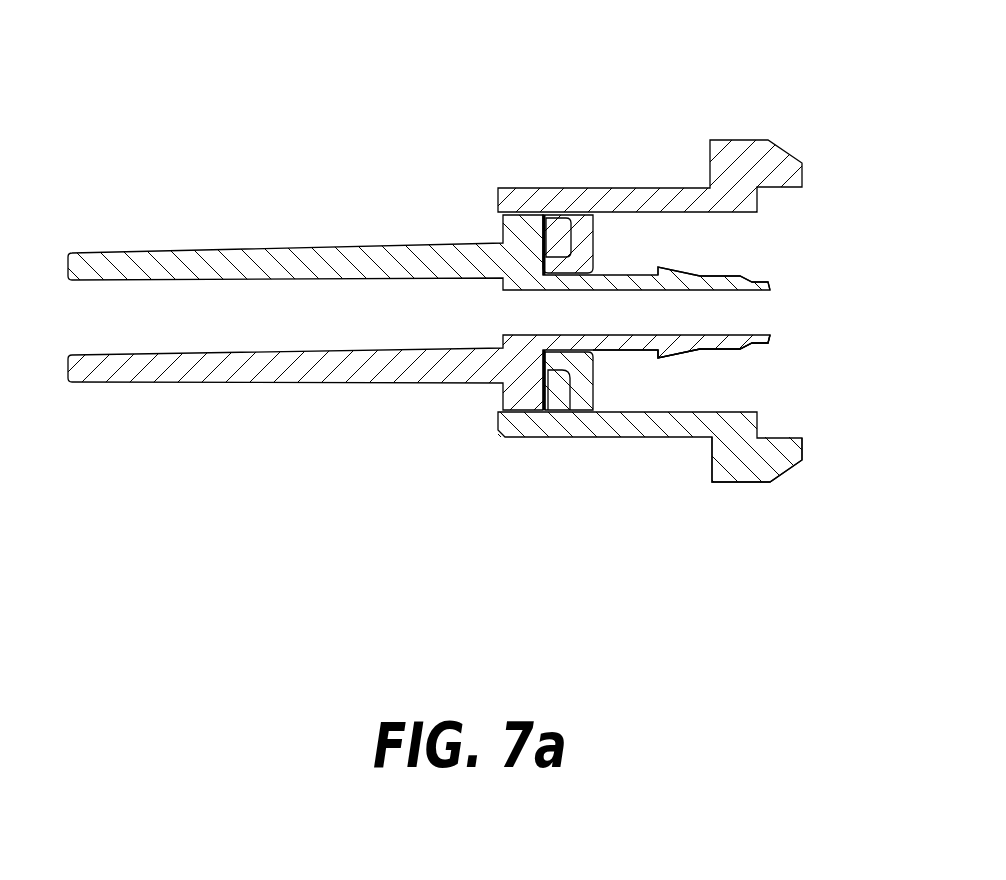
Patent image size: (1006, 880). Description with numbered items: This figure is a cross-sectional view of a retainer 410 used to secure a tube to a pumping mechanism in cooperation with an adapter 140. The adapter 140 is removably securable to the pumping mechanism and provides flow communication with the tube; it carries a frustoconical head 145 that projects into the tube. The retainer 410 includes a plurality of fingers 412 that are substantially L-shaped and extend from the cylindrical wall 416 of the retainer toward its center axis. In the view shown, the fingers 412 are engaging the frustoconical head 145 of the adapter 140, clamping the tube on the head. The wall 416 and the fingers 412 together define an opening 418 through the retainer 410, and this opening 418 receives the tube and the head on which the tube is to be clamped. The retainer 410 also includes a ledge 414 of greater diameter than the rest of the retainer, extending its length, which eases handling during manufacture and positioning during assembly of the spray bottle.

The adapter 140 is at (357, 375).
The frustoconical head 145 is at (693, 270).
The retainer 410 is at (648, 153).
The fingers 412 is at (580, 243).
The ledge 414 is at (760, 467).
The wall 416 is at (567, 430).
The opening 418 is at (760, 368).